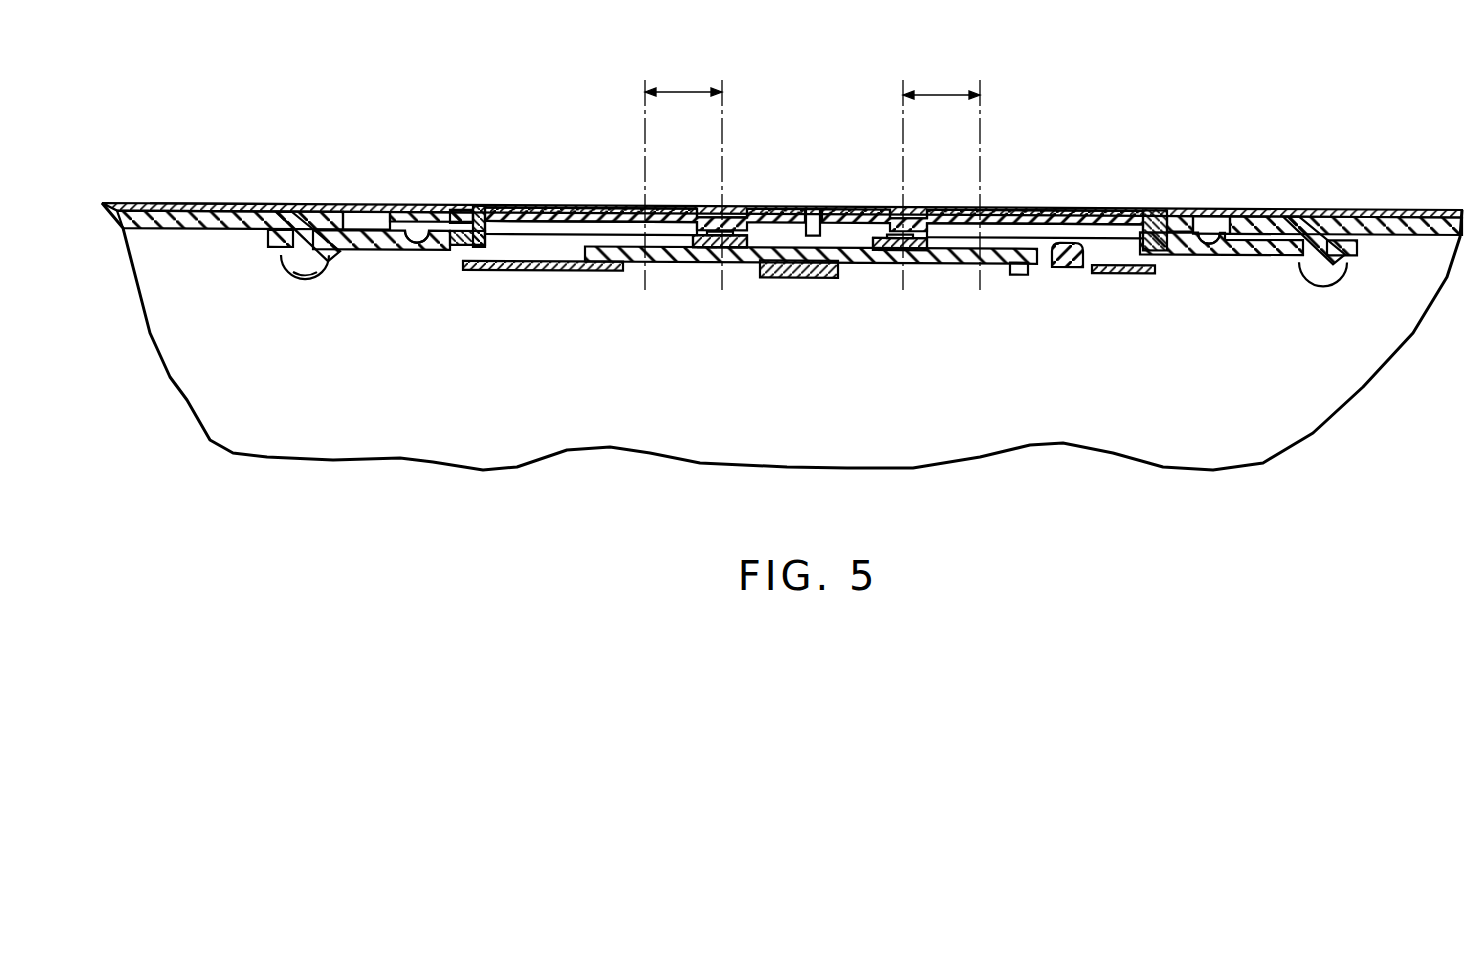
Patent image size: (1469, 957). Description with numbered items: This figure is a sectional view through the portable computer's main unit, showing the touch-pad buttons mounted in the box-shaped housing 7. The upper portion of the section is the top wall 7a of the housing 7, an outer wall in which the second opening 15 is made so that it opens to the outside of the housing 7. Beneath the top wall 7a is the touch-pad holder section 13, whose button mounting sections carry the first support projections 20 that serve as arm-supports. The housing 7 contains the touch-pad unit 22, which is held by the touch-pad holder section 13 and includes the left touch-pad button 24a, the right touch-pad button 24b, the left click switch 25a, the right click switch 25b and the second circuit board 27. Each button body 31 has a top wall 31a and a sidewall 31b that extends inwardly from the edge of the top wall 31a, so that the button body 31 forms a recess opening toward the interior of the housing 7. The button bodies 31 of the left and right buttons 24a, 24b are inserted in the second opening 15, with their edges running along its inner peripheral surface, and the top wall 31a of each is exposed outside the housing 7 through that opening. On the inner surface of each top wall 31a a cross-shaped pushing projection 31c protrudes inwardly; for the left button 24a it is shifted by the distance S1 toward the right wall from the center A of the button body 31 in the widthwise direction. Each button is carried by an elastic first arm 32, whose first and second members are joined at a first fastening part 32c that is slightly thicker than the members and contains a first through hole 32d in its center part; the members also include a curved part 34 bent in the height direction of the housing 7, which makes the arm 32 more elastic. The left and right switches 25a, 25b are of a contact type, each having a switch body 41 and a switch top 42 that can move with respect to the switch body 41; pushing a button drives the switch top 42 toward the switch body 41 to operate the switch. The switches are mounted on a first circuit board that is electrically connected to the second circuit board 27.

The housing 7 is at (1427, 203).
The top wall 7a is at (226, 212).
The touch-pad holder section 13 is at (305, 282).
The second opening 15 is at (477, 203).
The first support projection 20 is at (290, 261).
The touch-pad unit 22 is at (527, 288).
The left touch-pad button 24a is at (667, 193).
The right touch-pad button 24b is at (930, 193).
The left click switch 25a is at (707, 262).
The right click switch 25b is at (888, 262).
The second circuit board 27 is at (1003, 273).
The button body 31 is at (580, 200).
The top wall 31a is at (533, 212).
The sidewall 31b is at (812, 200).
The pushing projection 31c is at (730, 217).
The first arm 32 is at (368, 223).
The first fastening part 32c is at (267, 238).
The first through hole 32d is at (300, 226).
The curved part 34 is at (417, 232).
The switch body 41 is at (695, 258).
The switch top 42 is at (740, 261).
The center of the button body A is at (642, 212).
The distance s1 S1 is at (690, 92).